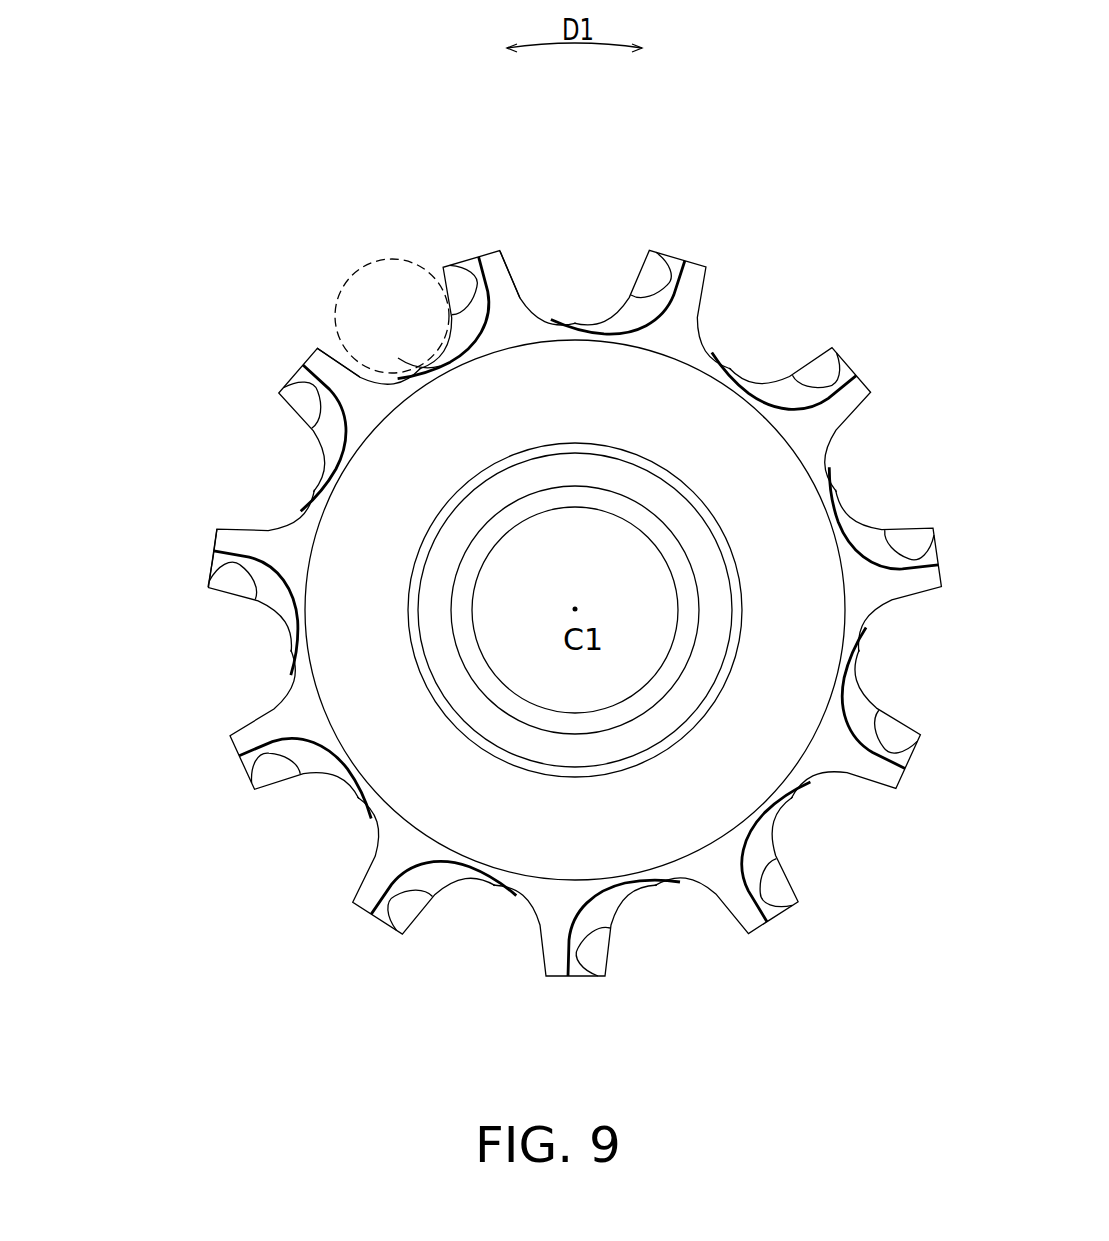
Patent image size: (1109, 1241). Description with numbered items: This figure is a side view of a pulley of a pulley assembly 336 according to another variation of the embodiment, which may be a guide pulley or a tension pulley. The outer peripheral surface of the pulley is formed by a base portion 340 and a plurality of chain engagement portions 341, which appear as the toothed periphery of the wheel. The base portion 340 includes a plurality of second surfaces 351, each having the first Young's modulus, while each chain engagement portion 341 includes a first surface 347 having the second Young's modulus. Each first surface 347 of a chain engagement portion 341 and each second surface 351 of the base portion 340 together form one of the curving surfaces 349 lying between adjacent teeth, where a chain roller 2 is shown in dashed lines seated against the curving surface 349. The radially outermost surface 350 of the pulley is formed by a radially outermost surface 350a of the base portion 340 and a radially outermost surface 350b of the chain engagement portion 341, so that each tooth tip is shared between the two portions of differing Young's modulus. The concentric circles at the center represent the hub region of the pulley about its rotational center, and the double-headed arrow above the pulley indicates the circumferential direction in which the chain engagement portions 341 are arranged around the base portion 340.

The chain roller 2 is at (380, 246).
The pulley assembly 336 is at (525, 527).
The base portion 340 is at (722, 268).
The chain engagement portion 341 is at (647, 246).
The first surface 347 is at (440, 292).
The curving surface 349 is at (400, 355).
The radially outermost surface 350 is at (472, 254).
The radially outermost surface of the base portion 350a is at (221, 543).
The radially outermost surface of the chain engagement portion 350b is at (217, 575).
The second surface 351 is at (517, 282).